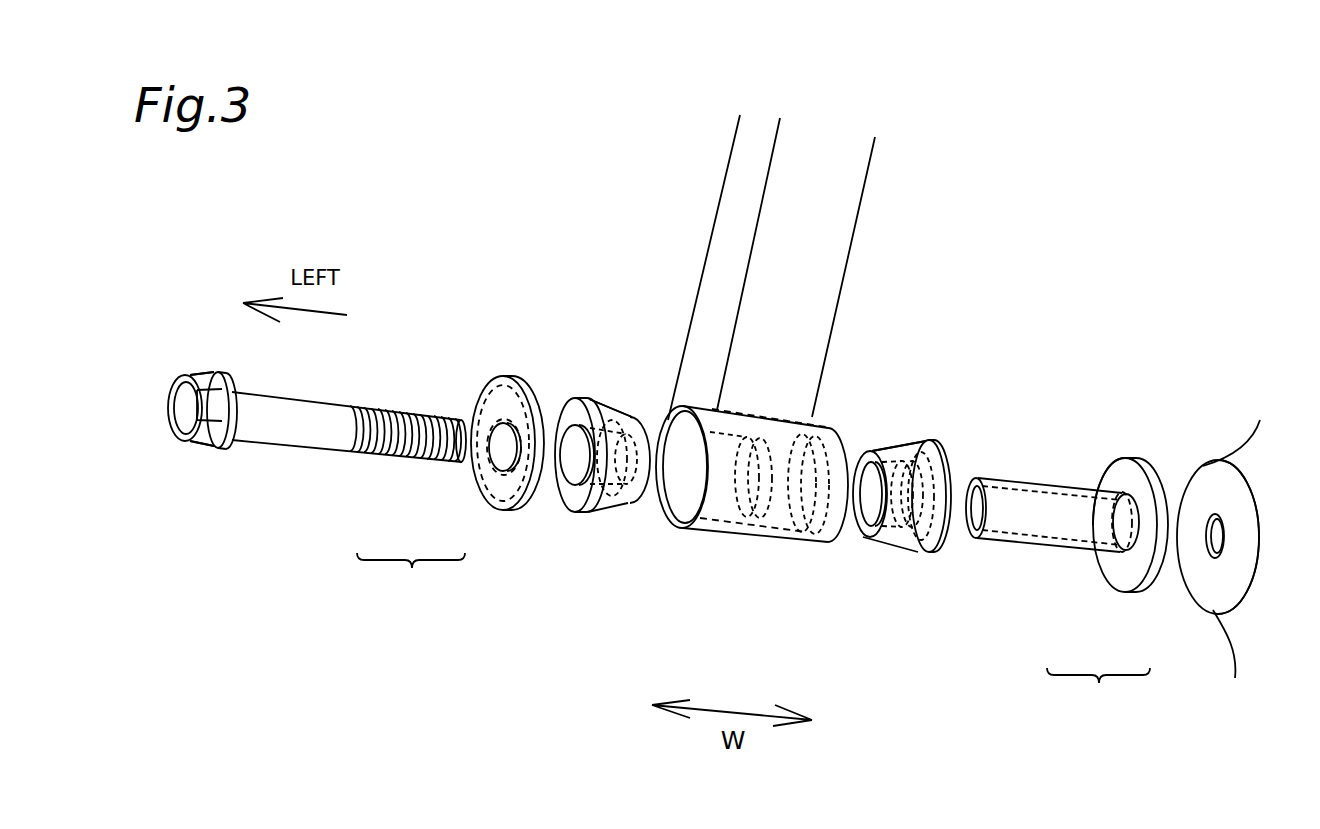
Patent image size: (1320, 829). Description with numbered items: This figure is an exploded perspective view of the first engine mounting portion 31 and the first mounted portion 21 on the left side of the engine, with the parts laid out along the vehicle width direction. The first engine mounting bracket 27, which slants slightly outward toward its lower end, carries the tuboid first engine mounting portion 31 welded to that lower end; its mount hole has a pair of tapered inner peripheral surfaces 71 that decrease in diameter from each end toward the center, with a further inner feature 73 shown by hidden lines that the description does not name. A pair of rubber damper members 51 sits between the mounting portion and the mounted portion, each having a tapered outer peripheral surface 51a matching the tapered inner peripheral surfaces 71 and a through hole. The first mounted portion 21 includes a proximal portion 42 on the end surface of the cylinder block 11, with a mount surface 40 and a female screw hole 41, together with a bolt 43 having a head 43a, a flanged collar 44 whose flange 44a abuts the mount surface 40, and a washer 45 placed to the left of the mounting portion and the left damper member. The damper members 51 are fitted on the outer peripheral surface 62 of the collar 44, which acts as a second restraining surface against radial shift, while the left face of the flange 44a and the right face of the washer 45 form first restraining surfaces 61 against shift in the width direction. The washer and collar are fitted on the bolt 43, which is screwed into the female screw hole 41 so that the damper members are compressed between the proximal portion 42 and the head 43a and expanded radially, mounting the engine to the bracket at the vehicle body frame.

The cylinder block 11 is at (1272, 420).
The first mounted portion 21 is at (753, 635).
The first engine mounting bracket 27 is at (727, 255).
The first engine mounting portion 31 is at (725, 556).
The mount surface 40 is at (1213, 483).
The female screw hole 41 is at (1224, 540).
The proximal portion 42 is at (1240, 610).
The bolt 43 is at (378, 448).
The head of the bolt 43a is at (195, 440).
The flanged collar 44 is at (1035, 545).
The flange 44a is at (1138, 462).
The washer 45 is at (478, 494).
The rubber damper member 51 is at (596, 514).
The tapered outer peripheral surface 51a is at (616, 404).
The first restraining surface 61 is at (518, 412).
The second restraining surface 62 is at (1027, 510).
The tapered inner peripheral surface 71 is at (705, 535).
The inner partition 73 is at (748, 530).